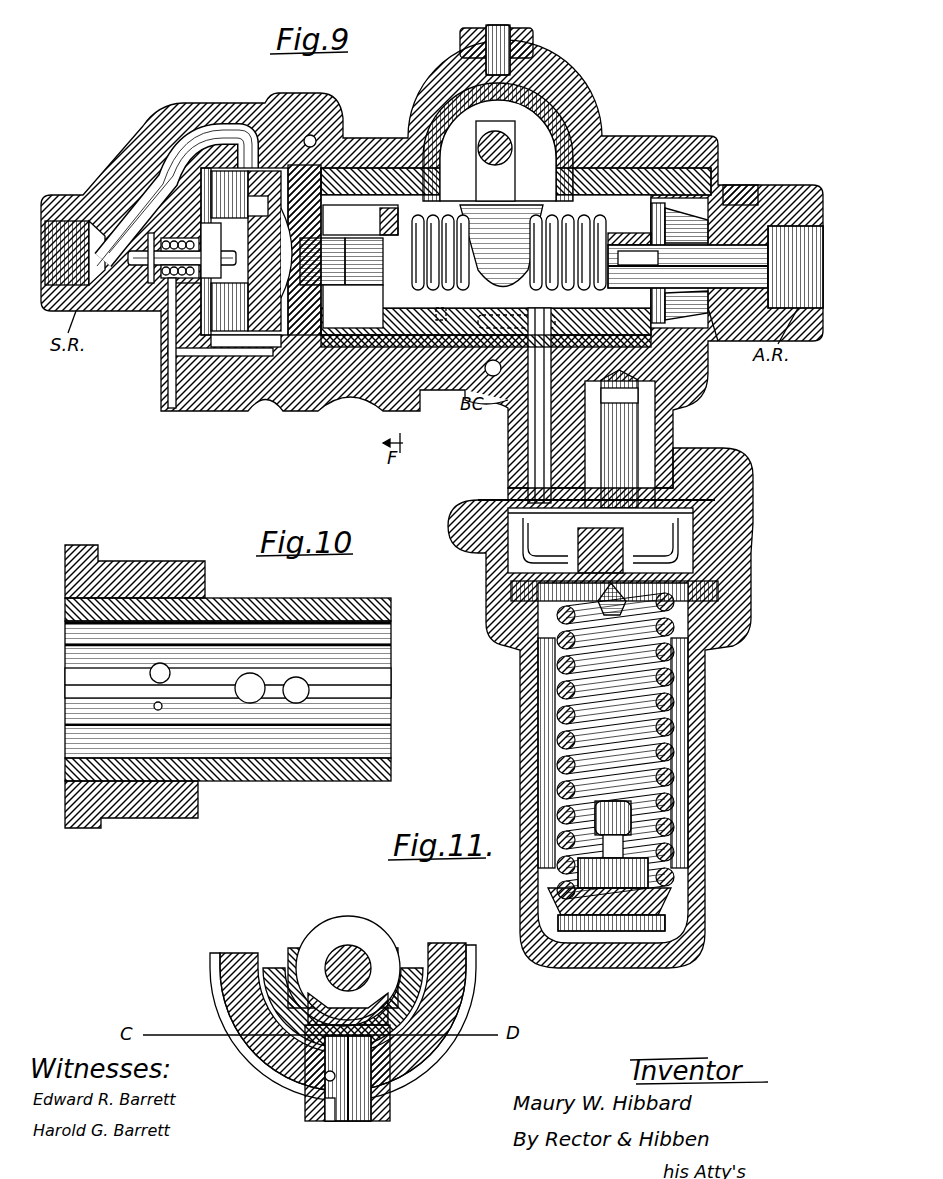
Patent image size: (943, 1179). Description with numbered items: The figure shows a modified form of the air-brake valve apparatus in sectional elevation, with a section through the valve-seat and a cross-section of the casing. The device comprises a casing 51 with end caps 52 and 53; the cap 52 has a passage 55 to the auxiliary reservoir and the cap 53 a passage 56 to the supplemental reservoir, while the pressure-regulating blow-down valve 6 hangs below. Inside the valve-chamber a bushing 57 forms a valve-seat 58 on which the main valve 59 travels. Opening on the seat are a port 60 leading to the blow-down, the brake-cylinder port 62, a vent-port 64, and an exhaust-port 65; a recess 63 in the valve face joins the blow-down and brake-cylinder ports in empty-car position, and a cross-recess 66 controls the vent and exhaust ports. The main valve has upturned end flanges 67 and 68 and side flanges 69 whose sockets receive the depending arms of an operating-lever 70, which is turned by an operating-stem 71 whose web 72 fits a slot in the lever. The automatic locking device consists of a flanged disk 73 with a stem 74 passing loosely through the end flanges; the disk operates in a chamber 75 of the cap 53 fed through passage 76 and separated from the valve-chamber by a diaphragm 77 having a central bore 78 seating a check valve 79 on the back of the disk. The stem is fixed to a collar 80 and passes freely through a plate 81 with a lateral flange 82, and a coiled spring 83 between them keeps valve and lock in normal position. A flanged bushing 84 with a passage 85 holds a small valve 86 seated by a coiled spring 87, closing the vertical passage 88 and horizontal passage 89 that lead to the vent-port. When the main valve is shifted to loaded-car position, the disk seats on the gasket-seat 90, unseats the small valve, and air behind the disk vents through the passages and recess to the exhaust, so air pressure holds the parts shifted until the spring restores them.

In FIG. 9, the pressure-regulating valve 6 is at (698, 748).
In FIG. 9, the casing 51 is at (665, 128).
In FIG. 10, the casing 51 is at (112, 800).
In FIG. 11, the casing 51 is at (260, 1010).
In FIG. 9, the end cap 52 is at (740, 180).
In FIG. 9, the end cap 53 is at (170, 97).
In FIG. 9, the passage 55 is at (745, 300).
In FIG. 9, the passage 56 is at (47, 212).
In FIG. 9, the bushing 57 is at (600, 160).
In FIG. 10, the bushing 57 is at (384, 621).
In FIG. 11, the bushing 57 is at (255, 961).
In FIG. 9, the valve-seat 58 is at (350, 340).
In FIG. 10, the valve-seat 58 is at (378, 700).
In FIG. 11, the valve-seat 58 is at (280, 1055).
In FIG. 9, the main valve 59 is at (330, 395).
In FIG. 11, the main valve 59 is at (375, 1000).
In FIG. 9, the port 60 is at (520, 420).
In FIG. 10, the port 60 is at (302, 682).
In FIG. 9, the brake-cylinder port 62 is at (478, 370).
In FIG. 10, the brake-cylinder port 62 is at (232, 688).
In FIG. 9, the recess 63 is at (516, 310).
In FIG. 10, the vent-port 64 is at (145, 699).
In FIG. 11, the vent-port 64 is at (300, 1090).
In FIG. 10, the exhaust-port 65 is at (163, 668).
In FIG. 11, the exhaust-port 65 is at (360, 1113).
In FIG. 9, the cross-recess 66 is at (445, 365).
In FIG. 11, the cross-recess 66 is at (372, 1035).
In FIG. 9, the end flange 67 is at (378, 244).
In FIG. 9, the end flange 68 is at (622, 240).
In FIG. 9, the side flange 69 is at (501, 249).
In FIG. 9, the operating-lever 70 is at (470, 150).
In FIG. 9, the operating-stem 71 is at (478, 125).
In FIG. 9, the web 72 is at (470, 140).
In FIG. 9, the flanged disk 73 is at (252, 160).
In FIG. 9, the stem 74 is at (688, 266).
In FIG. 11, the stem 74 is at (352, 948).
In FIG. 9, the chamber 75 is at (258, 330).
In FIG. 9, the passage 76 is at (135, 145).
In FIG. 9, the diaphragm 77 is at (310, 110).
In FIG. 9, the central bore 78 is at (248, 195).
In FIG. 9, the valve 79 is at (322, 261).
In FIG. 9, the collar 80 is at (580, 262).
In FIG. 9, the plate 81 is at (440, 250).
In FIG. 9, the lateral flange 82 is at (345, 160).
In FIG. 9, the coiled spring 83 is at (568, 249).
In FIG. 9, the flanged bushing 84 is at (160, 262).
In FIG. 9, the passage 85 is at (200, 250).
In FIG. 9, the valve 86 is at (222, 260).
In FIG. 9, the coiled spring 87 is at (142, 270).
In FIG. 9, the vertical passage 88 is at (162, 350).
In FIG. 9, the horizontal passage 89 is at (215, 350).
In FIG. 11, the horizontal passage 89 is at (310, 1100).
In FIG. 9, the gasket-seat 90 is at (180, 330).